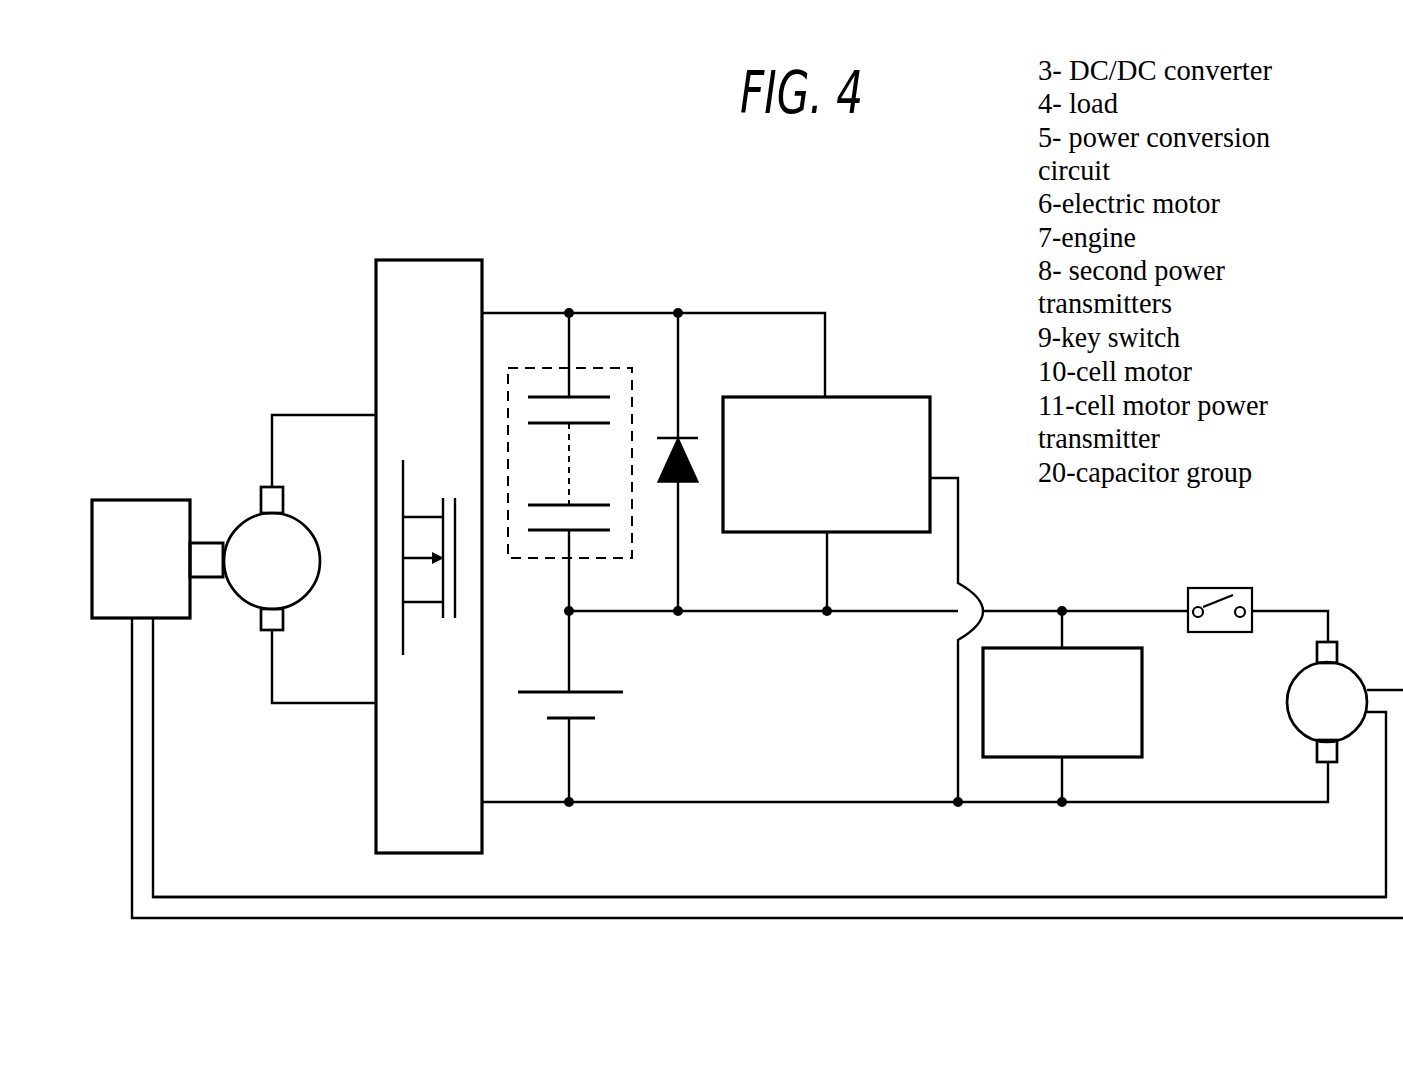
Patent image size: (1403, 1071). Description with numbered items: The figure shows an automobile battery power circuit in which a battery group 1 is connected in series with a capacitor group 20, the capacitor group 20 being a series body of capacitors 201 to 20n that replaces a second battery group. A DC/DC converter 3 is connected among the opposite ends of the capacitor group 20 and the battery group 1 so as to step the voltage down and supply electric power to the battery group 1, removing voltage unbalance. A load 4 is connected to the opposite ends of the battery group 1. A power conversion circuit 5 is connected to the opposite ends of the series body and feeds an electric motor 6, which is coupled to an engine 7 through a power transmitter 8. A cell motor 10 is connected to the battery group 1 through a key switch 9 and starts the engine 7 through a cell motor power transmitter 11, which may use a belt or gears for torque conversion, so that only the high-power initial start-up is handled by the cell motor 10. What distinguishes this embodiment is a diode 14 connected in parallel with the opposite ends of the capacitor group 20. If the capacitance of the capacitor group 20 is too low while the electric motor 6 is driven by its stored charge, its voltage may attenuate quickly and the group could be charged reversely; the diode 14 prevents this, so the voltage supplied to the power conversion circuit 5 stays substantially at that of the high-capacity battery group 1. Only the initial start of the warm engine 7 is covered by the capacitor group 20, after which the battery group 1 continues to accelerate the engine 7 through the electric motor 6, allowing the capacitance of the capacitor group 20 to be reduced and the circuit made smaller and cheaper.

The battery group 1 is at (613, 692).
The DC/DC converter 3 is at (875, 403).
The load 4 is at (1133, 702).
The power conversion circuit 5 is at (428, 268).
The electric motor 6 is at (247, 532).
The engine 7 is at (147, 506).
The power transmitter 8 is at (207, 567).
The key switch 9 is at (1242, 597).
The cell motor 10 is at (1348, 682).
The cell motor power transmitter 11 is at (727, 905).
The diode 14 is at (692, 437).
The capacitor group 20 is at (565, 445).
The capacitor 20n is at (550, 393).
The capacitor 201 is at (550, 533).